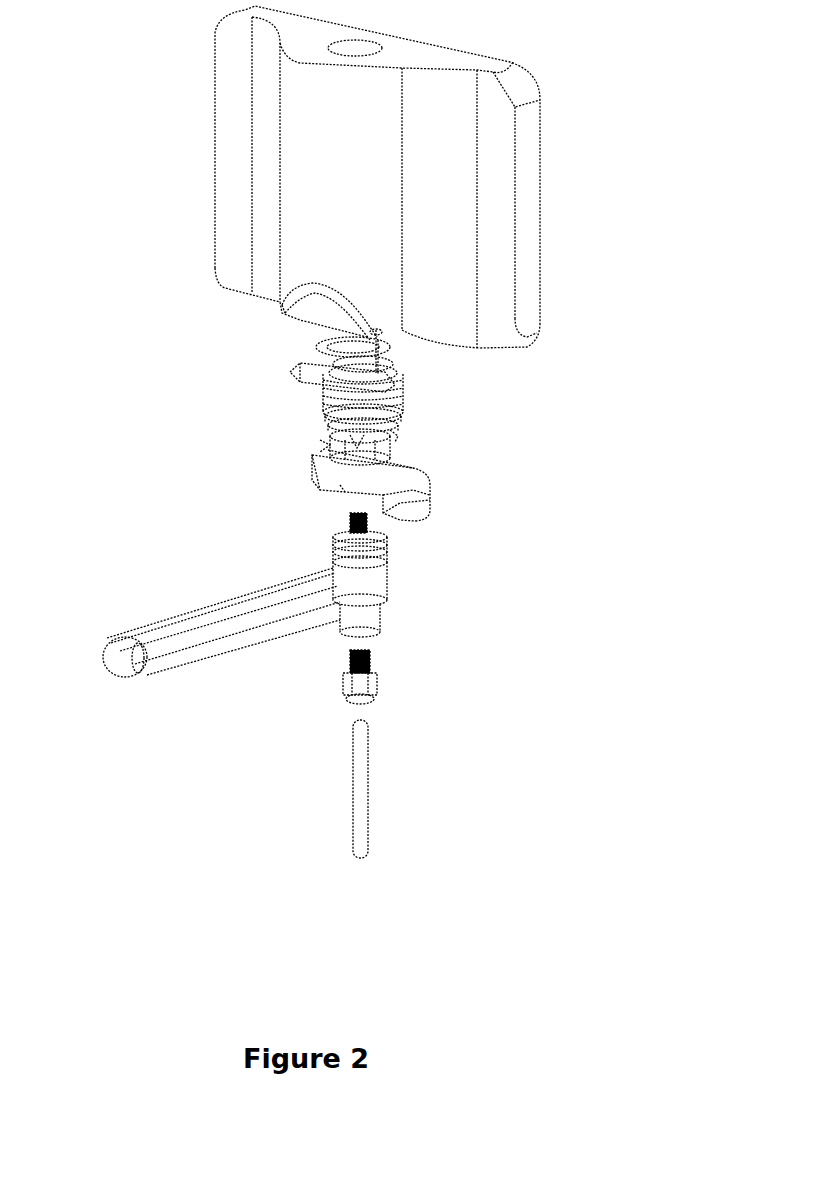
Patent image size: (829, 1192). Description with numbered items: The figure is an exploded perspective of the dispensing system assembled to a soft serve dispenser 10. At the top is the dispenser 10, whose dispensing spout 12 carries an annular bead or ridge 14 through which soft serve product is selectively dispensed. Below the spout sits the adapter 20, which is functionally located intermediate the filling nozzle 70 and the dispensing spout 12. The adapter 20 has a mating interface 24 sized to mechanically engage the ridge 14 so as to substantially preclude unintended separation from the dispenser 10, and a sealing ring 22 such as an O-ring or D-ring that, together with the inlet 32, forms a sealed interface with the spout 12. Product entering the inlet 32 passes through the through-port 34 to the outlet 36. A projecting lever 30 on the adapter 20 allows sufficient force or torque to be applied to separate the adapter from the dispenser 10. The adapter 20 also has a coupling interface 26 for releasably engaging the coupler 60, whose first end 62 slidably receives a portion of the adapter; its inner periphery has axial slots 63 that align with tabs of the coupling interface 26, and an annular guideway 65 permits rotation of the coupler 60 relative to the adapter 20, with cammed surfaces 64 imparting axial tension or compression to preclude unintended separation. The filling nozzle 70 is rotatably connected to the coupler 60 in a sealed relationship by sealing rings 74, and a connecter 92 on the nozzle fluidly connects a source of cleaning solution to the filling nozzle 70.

The soft serve dispenser 10 is at (523, 85).
The dispensing spout 12 is at (375, 335).
The ridge 14 is at (373, 335).
The adapter 20 is at (392, 396).
The sealing ring 22 is at (377, 373).
The mating interface 24 is at (377, 378).
The coupling interface 26 is at (392, 428).
The projecting lever 30 is at (290, 373).
The inlet 32 is at (377, 373).
The through-port 34 is at (340, 353).
The outlet 36 is at (396, 438).
The coupler 60 is at (420, 498).
The first end 62 is at (327, 443).
The axial slots 63 is at (340, 488).
The cammed surfaces 64 is at (400, 420).
The annular guideway 65 is at (330, 433).
The filling nozzle 70 is at (178, 658).
The sealing rings 74 is at (333, 550).
The connecter 92 is at (368, 683).